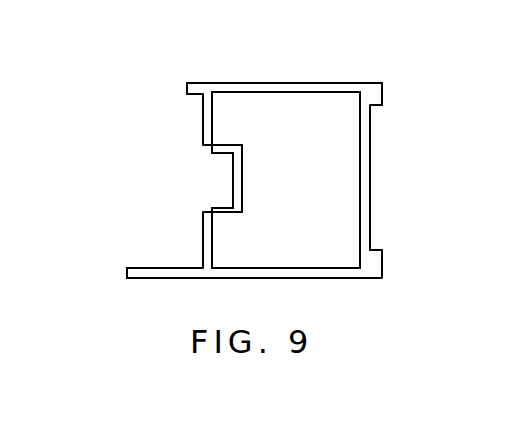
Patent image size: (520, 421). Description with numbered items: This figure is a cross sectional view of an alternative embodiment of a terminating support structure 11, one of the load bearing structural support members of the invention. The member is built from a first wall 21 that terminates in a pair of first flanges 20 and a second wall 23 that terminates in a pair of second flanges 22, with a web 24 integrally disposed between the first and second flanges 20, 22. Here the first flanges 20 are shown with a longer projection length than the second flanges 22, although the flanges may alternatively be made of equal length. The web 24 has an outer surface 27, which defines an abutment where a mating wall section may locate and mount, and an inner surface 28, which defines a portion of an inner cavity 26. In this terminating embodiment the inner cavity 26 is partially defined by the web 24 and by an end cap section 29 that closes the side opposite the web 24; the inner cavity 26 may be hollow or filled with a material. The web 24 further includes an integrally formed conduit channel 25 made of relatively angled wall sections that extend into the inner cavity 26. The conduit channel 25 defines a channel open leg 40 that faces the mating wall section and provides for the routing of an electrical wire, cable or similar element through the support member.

The extruded frame member 11 is at (389, 66).
The first flanges 20 is at (146, 273).
The first wall 21 is at (290, 279).
The second flanges 22 is at (187, 84).
The second wall 23 is at (281, 81).
The web 24 is at (208, 241).
The conduit channel 25 is at (218, 180).
The inner cavity 26 is at (321, 201).
The outer surface 27 is at (203, 118).
The inner surface 28 is at (212, 124).
The end cap section 29 is at (380, 168).
The channel open leg 40 is at (213, 163).